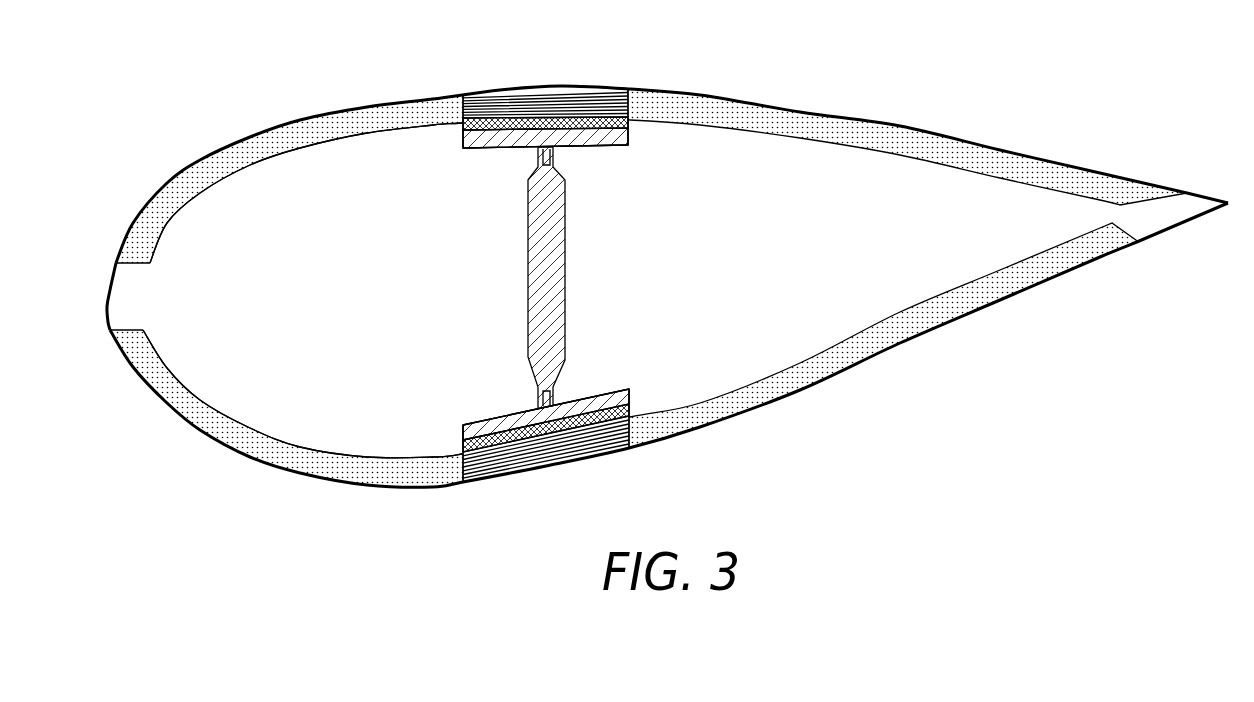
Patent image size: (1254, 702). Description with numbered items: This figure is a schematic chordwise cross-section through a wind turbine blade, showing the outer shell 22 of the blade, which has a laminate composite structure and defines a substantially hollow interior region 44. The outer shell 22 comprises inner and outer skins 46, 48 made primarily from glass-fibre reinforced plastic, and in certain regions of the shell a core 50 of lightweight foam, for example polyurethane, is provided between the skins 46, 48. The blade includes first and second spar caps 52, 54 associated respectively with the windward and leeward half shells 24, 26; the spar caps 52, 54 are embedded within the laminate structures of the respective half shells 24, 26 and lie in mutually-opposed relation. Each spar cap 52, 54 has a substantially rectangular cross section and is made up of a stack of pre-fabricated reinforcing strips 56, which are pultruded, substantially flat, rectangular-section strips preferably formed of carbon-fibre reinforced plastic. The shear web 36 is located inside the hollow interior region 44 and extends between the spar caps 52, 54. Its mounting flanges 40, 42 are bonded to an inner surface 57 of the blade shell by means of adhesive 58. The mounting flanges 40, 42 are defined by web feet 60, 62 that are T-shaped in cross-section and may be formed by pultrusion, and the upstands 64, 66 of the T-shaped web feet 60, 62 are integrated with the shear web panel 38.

The outer shell 22 is at (667, 289).
The windward half shell 24 is at (783, 403).
The leeward half shell 26 is at (722, 92).
The shear web 36 is at (555, 284).
The shear web panel 38 is at (535, 292).
The mounting flange 40 is at (587, 380).
The mounting flange 42 is at (583, 158).
The hollow interior region 44 is at (393, 288).
The inner skin 46 is at (846, 150).
The outer skin 48 is at (873, 120).
The core 50 is at (360, 125).
The first spar cap 52 is at (490, 488).
The second spar cap 54 is at (478, 88).
The reinforcing strips 56 is at (555, 100).
The inner surface 57 is at (630, 128).
The adhesive 58 is at (463, 140).
The web foot 60 is at (487, 430).
The web foot 62 is at (492, 147).
The upstand 64 is at (545, 394).
The upstand 66 is at (545, 168).